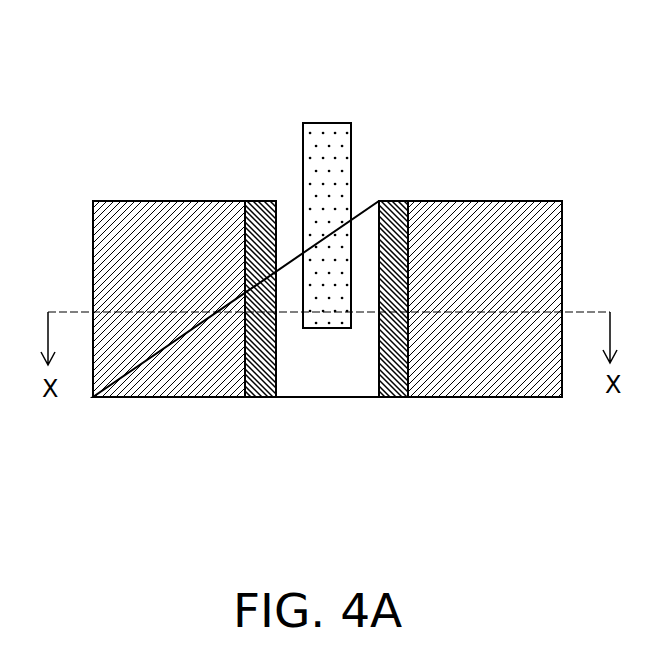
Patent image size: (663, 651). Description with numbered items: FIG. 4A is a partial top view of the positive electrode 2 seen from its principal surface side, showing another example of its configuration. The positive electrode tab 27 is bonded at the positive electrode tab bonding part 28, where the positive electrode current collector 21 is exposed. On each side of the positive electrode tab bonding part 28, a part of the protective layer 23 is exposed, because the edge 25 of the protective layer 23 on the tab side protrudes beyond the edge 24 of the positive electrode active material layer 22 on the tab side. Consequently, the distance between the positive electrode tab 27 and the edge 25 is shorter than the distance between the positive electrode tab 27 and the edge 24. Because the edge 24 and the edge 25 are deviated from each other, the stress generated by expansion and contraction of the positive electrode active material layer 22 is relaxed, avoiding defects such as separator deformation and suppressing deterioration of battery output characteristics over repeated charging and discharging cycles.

The positive electrode 2 is at (58, 96).
The positive electrode current collector 21 is at (327, 462).
The positive electrode active material layer 22 is at (162, 388).
The protective layer 23 is at (392, 200).
The edge of the positive electrode active material layer 24 is at (395, 398).
The edge of the protective layer 25 is at (375, 347).
The positive electrode tab 27 is at (327, 140).
The positive electrode tab bonding part 28 is at (315, 397).